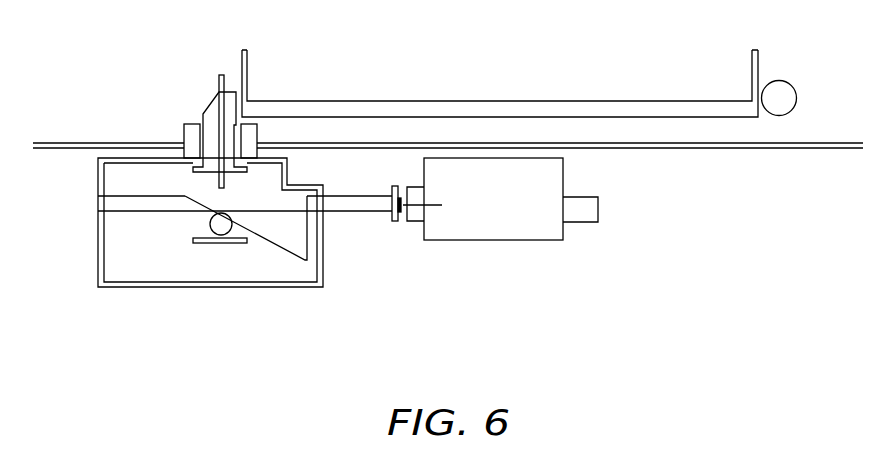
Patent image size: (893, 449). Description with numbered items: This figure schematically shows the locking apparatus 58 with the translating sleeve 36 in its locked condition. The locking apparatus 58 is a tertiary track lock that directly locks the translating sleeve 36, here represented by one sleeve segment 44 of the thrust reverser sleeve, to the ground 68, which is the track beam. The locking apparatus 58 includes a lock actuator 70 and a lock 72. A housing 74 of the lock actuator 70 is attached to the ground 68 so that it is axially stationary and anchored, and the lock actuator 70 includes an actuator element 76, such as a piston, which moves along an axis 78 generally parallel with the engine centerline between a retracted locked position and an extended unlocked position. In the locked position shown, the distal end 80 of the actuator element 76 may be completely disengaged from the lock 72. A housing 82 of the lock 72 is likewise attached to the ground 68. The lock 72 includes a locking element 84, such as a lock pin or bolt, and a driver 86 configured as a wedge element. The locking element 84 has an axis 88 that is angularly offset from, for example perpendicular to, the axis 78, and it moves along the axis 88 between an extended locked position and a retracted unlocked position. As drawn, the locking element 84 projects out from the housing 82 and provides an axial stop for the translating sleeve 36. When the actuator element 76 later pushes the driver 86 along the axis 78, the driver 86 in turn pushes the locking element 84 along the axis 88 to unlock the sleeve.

The translating sleeve 36 is at (642, 98).
The sleeve segment 44 is at (582, 100).
The locking apparatus 58 is at (362, 262).
The ground 68 is at (803, 150).
The lock actuator 70 is at (500, 201).
The lock 72 is at (206, 217).
The housing 74 is at (540, 241).
The actuator element 76 is at (417, 185).
The axis 78 is at (415, 212).
The distal end 80 is at (395, 190).
The housing 82 is at (112, 288).
The locking element 84 is at (202, 113).
The driver 86 is at (282, 248).
The axis 88 is at (218, 80).